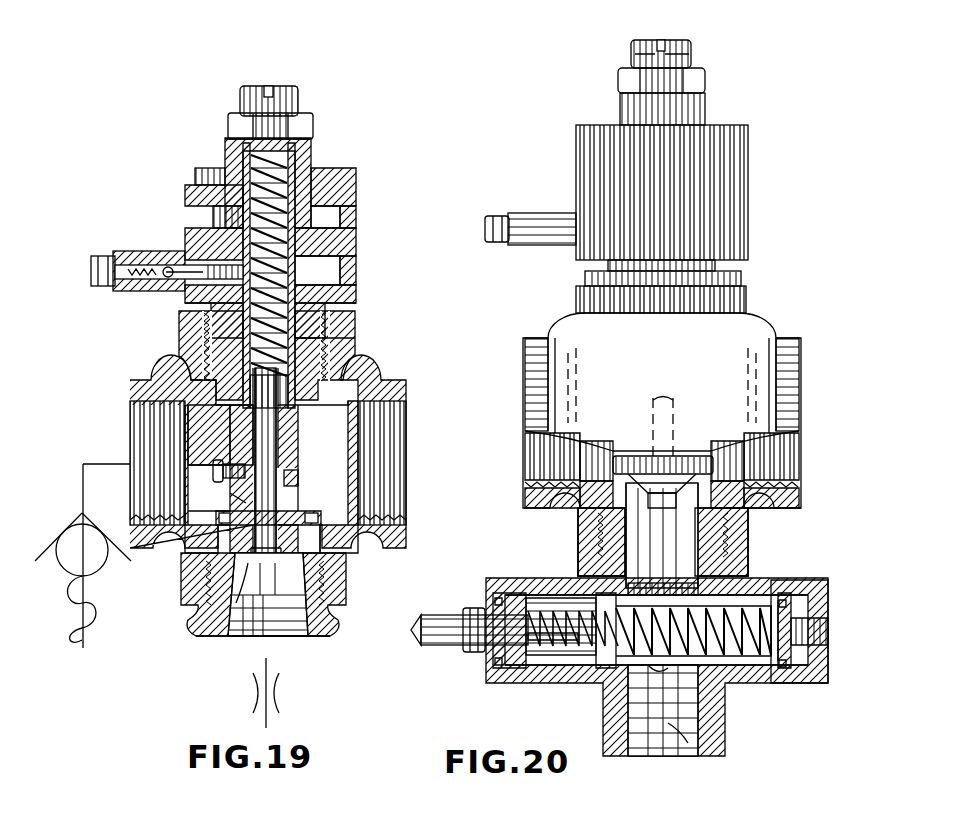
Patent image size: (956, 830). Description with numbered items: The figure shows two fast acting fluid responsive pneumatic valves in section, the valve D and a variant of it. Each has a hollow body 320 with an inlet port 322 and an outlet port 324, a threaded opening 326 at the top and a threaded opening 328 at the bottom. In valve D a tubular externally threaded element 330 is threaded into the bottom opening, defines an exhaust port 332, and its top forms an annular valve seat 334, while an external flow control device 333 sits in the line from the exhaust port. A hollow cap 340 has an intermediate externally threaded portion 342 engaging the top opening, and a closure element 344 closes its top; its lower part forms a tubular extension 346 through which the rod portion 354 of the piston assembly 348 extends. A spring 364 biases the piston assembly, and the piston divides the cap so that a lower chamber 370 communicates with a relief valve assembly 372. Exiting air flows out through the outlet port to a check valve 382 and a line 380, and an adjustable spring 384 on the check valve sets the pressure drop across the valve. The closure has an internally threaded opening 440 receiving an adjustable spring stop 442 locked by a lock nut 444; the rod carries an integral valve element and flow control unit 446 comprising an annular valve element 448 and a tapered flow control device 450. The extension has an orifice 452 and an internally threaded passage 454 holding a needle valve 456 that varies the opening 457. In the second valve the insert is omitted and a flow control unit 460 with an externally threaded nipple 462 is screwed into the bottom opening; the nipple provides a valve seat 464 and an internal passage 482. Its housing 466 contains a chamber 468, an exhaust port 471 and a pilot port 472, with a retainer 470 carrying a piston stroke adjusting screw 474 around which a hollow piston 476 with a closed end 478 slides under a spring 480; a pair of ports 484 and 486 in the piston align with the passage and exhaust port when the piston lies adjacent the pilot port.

In FIG. 19, the hollow body 320 is at (124, 380).
In FIG. 19, the inlet port 322 is at (375, 410).
In FIG. 19, the outlet port 324 is at (124, 403).
In FIG. 19, the threaded opening 326 is at (326, 341).
In FIG. 19, the threaded opening 328 is at (338, 590).
In FIG. 20, the threaded opening 328 is at (668, 527).
In FIG. 19, the tubular externally threaded element 330 is at (188, 630).
In FIG. 19, the exhaust port 332 is at (292, 631).
In FIG. 19, the external flow control device 333 is at (285, 688).
In FIG. 19, the annular valve seat 334 is at (322, 540).
In FIG. 19, the hollow cap 340 is at (335, 296).
In FIG. 20, the hollow cap 340 is at (742, 252).
In FIG. 19, the externally threaded portion 342 is at (176, 326).
In FIG. 19, the closure element 344 is at (304, 162).
In FIG. 19, the tubular extension 346 is at (188, 165).
In FIG. 19, the piston assembly 348 is at (325, 235).
In FIG. 19, the rod portion 354 is at (270, 493).
In FIG. 19, the spring 364 is at (240, 222).
In FIG. 19, the lower chamber 370 is at (322, 270).
In FIG. 19, the relief valve assembly 372 is at (158, 244).
In FIG. 20, the relief valve assembly 372 is at (535, 240).
In FIG. 19, the line 380 is at (74, 458).
In FIG. 19, the check valve 382 is at (90, 570).
In FIG. 19, the adjustable spring 384 is at (82, 622).
In FIG. 19, the internally threaded opening 440 is at (303, 136).
In FIG. 19, the adjustable spring stop 442 is at (220, 132).
In FIG. 19, the lock nut 444 is at (302, 112).
In FIG. 19, the integral valve element and flow control unit 446 is at (262, 77).
In FIG. 20, the integral valve element and flow control unit 446 is at (660, 33).
In FIG. 19, the annular valve element 448 is at (312, 508).
In FIG. 19, the tapered flow control device 450 is at (261, 580).
In FIG. 19, the orifice 452 is at (243, 462).
In FIG. 19, the internally threaded passage 454 is at (216, 452).
In FIG. 19, the needle valve 456 is at (203, 462).
In FIG. 19, the opening 457 is at (215, 528).
In FIG. 20, the flow control unit 460 is at (520, 676).
In FIG. 20, the externally threaded nipple 462 is at (595, 545).
In FIG. 20, the valve seat 464 is at (745, 503).
In FIG. 20, the housing 466 is at (565, 665).
In FIG. 20, the chamber 468 is at (488, 648).
In FIG. 20, the retainer 470 is at (490, 592).
In FIG. 20, the exhaust port 471 is at (690, 722).
In FIG. 20, the pilot port 472 is at (484, 660).
In FIG. 20, the piston stroke adjusting screw 474 is at (464, 619).
In FIG. 20, the hollow piston 476 is at (778, 577).
In FIG. 20, the closed end 478 is at (782, 640).
In FIG. 20, the spring 480 is at (760, 632).
In FIG. 20, the internal passage 482 is at (725, 552).
In FIG. 20, the port 484 is at (690, 588).
In FIG. 20, the port 486 is at (680, 662).
In FIG. 19, the valve D is at (106, 344).